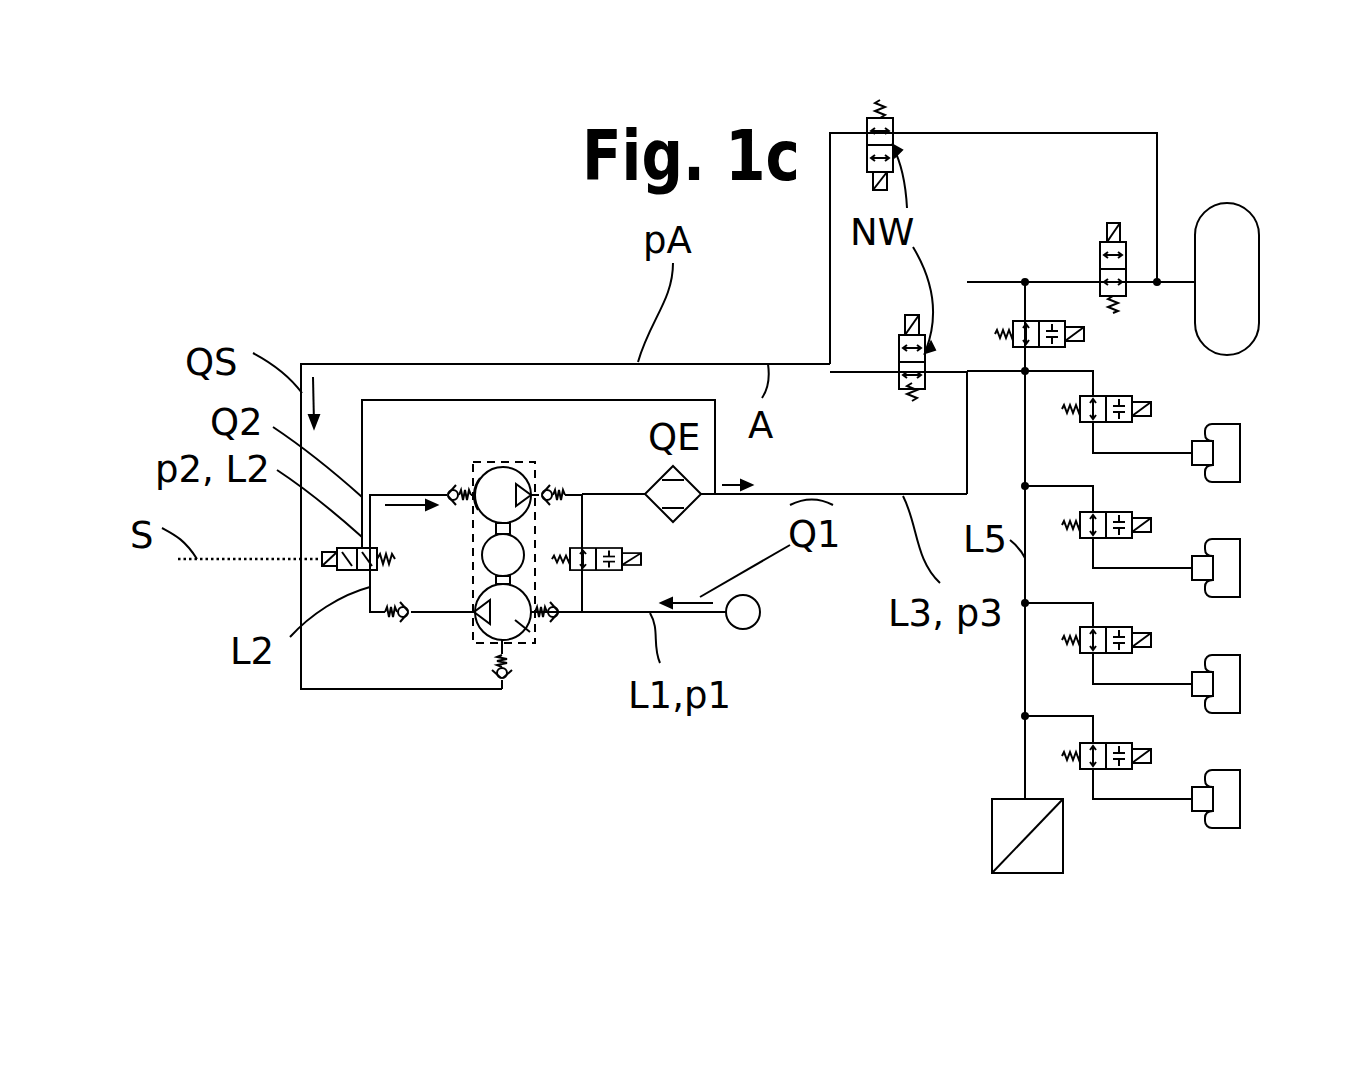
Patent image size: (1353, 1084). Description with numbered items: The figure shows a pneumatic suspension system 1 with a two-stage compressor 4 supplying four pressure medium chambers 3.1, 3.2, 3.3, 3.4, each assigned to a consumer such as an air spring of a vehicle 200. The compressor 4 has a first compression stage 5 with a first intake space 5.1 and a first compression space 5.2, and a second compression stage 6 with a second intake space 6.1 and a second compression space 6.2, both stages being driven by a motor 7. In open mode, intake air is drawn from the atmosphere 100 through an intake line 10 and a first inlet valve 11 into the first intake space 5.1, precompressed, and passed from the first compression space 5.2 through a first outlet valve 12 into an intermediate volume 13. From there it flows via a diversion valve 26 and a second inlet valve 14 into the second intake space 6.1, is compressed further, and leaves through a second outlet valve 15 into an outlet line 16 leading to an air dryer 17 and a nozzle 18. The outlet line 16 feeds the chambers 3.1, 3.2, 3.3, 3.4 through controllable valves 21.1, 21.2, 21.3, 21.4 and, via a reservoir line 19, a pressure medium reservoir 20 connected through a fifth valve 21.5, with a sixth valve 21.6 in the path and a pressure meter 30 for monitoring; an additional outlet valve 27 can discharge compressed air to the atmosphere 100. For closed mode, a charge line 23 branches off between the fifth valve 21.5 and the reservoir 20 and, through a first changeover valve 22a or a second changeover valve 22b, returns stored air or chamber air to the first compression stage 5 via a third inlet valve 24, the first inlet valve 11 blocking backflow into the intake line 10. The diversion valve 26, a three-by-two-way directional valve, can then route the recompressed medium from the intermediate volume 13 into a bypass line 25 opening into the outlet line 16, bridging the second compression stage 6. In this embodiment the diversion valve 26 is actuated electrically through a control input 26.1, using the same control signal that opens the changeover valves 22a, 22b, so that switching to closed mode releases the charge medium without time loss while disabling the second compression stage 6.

The pneumatic suspension system 1 is at (511, 221).
The vehicle 200 is at (868, 748).
The charge line 23 is at (372, 400).
The bypass line 25 is at (353, 365).
The outlet line 16 is at (773, 494).
The two-stage compressor 4 is at (505, 465).
The second compression stage 6 is at (488, 476).
The second intake space 6.1 is at (480, 485).
The second compression space 6.2 is at (527, 480).
The motor 7 is at (478, 568).
The first compression stage 5 is at (515, 640).
The first intake space 5.1 is at (518, 623).
The first compression space 5.2 is at (490, 622).
The second inlet valve 14 is at (457, 487).
The second outlet valve 15 is at (545, 488).
The first outlet valve 12 is at (388, 617).
The first inlet valve 11 is at (548, 620).
The third inlet valve 24 is at (497, 683).
The intermediate volume 13 is at (378, 592).
The diversion valve 26 is at (337, 570).
The control input 26.1 is at (323, 550).
The additional outlet valve 27 is at (625, 556).
The air dryer 17 is at (690, 510).
The nozzle 18 is at (793, 485).
The intake line 10 is at (697, 615).
The atmosphere 100 is at (747, 607).
The first changeover valve 22a is at (867, 173).
The second changeover valve 22b is at (905, 335).
The reservoir line 19 is at (1058, 282).
The fifth valve 21.5 is at (1127, 237).
The pressure medium reservoir 20 is at (1242, 338).
The sixth valve 21.6 is at (1063, 342).
The controllable valve 21.1 is at (1133, 400).
The controllable valve 21.2 is at (1133, 516).
The controllable valve 21.3 is at (1133, 631).
The controllable valve 21.4 is at (1133, 747).
The pressure medium chamber 3.1 is at (1228, 455).
The pressure medium chamber 3.2 is at (1228, 570).
The pressure medium chamber 3.3 is at (1228, 686).
The pressure medium chamber 3.4 is at (1228, 801).
The pressure meter 30 is at (998, 810).